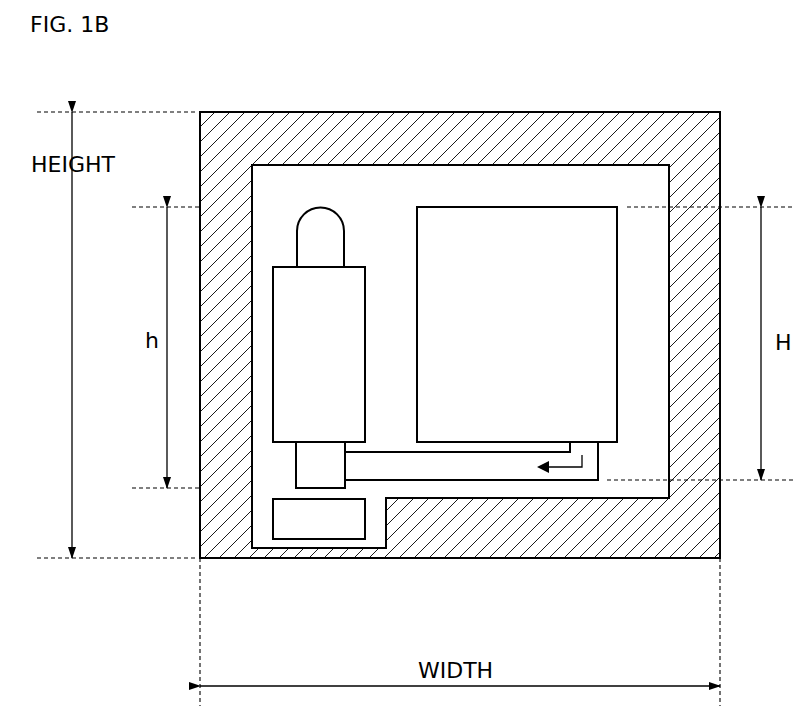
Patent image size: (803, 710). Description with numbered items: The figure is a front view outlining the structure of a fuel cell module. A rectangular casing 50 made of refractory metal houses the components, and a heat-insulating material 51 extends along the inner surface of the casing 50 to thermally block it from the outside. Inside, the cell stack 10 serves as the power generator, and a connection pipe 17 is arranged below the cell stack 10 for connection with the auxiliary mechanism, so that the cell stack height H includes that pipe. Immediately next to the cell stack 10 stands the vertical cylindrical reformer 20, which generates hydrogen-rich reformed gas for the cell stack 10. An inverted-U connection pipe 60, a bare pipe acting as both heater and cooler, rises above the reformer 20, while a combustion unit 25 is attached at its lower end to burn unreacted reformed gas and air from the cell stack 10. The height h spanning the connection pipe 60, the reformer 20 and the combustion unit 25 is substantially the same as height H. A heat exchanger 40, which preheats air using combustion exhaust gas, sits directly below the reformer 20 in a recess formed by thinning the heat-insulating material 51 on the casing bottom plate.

The cell stack 10 is at (505, 225).
The connection pipe 17 is at (482, 481).
The reformer 20 is at (350, 288).
The combustion unit 25 is at (320, 463).
The heat exchanger 40 is at (340, 540).
The casing 50 is at (643, 112).
The heat-insulating material 51 is at (660, 518).
The connection pipe 60 is at (315, 226).